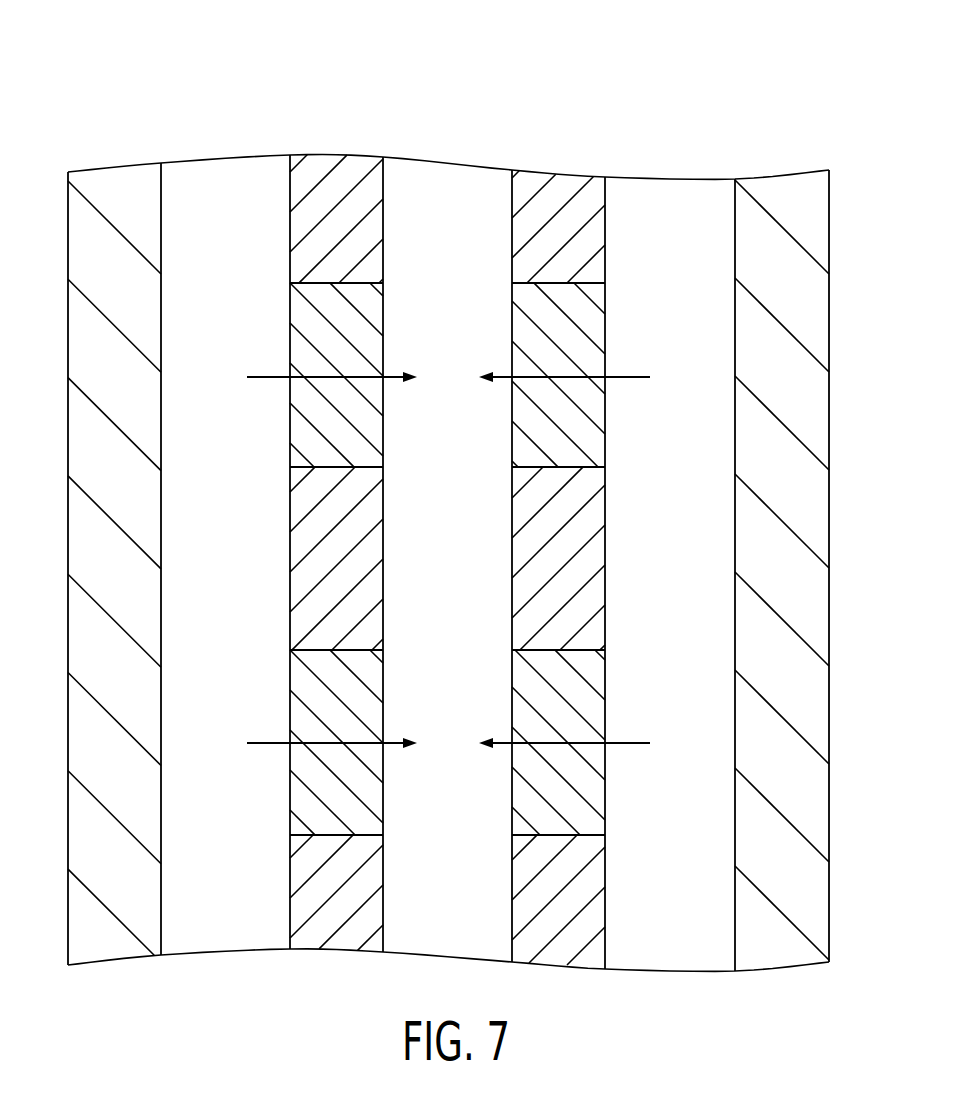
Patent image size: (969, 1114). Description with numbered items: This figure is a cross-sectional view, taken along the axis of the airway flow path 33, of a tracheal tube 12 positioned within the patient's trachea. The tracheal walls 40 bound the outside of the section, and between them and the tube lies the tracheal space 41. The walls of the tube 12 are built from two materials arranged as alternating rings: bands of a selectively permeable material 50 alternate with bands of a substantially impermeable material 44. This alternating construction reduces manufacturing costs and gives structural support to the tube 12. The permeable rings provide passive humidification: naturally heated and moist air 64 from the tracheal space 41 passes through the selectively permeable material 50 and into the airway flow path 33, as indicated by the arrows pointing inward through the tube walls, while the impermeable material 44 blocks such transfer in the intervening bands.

The tracheal tube 12 is at (158, 54).
The tracheal walls 40 is at (68, 197).
The tracheal space 41 is at (239, 571).
The airway flow path 33 is at (459, 571).
The substantially impermeable material 44 is at (302, 505).
The selectively permeable material 50 is at (302, 317).
The air 64 is at (270, 376).